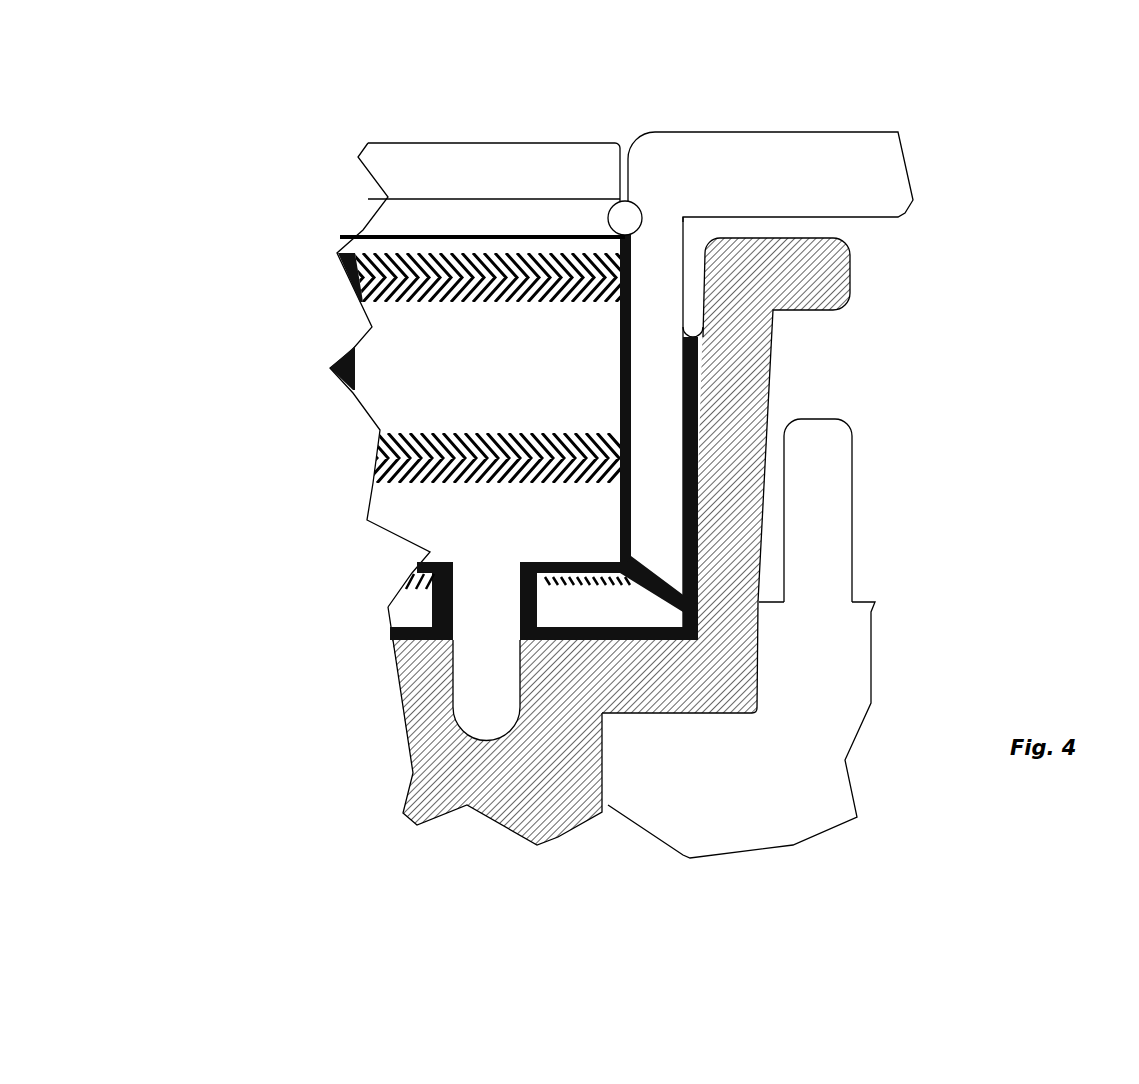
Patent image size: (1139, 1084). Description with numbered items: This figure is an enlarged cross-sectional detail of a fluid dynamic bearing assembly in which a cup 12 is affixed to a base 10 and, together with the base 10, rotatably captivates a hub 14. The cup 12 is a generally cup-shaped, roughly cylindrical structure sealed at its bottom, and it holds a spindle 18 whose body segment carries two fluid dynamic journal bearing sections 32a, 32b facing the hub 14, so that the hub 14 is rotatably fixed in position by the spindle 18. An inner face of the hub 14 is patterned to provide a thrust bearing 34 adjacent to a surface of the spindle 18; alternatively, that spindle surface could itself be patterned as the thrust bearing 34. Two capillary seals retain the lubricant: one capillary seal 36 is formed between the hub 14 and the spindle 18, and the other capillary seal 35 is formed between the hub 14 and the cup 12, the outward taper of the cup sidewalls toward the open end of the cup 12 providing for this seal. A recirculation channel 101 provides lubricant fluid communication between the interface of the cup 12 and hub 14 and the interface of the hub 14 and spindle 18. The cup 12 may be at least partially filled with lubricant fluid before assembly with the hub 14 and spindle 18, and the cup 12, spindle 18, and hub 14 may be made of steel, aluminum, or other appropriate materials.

The base 10 is at (788, 782).
The cup 12 is at (413, 780).
The hub 14 is at (888, 167).
The spindle 18 is at (422, 178).
The fluid dynamic journal bearing section 32a is at (315, 298).
The fluid dynamic journal bearing section 32b is at (345, 430).
The thrust bearing 34 is at (413, 592).
The capillary seal 35 is at (698, 313).
The capillary seal 36 is at (625, 220).
The recirculation channel 101 is at (662, 587).